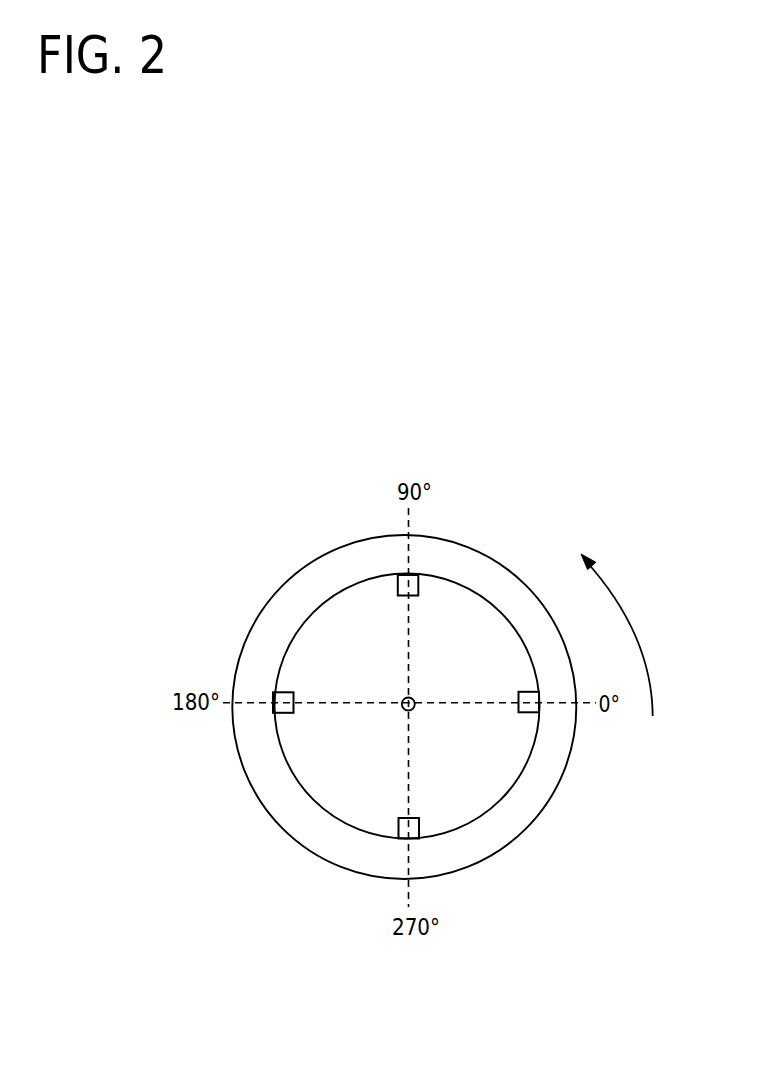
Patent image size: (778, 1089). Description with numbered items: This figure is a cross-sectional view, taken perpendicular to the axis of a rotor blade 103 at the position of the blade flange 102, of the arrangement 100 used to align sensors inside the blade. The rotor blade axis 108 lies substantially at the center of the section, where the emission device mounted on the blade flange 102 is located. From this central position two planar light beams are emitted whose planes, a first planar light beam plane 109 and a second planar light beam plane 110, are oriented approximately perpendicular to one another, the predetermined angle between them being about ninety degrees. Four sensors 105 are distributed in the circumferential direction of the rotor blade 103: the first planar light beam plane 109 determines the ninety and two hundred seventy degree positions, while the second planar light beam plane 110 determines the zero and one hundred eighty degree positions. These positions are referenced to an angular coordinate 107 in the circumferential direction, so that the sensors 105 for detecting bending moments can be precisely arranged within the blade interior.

The imaging system 100 is at (379, 528).
The blade flange 102 is at (493, 575).
The rotor blade 103 is at (265, 610).
The sensors 105 is at (398, 584).
The angular coordinate 107 is at (640, 632).
The rotor blade axis 108 is at (403, 700).
The first planar light beam plane 109 is at (410, 667).
The second planar light beam plane 110 is at (330, 704).